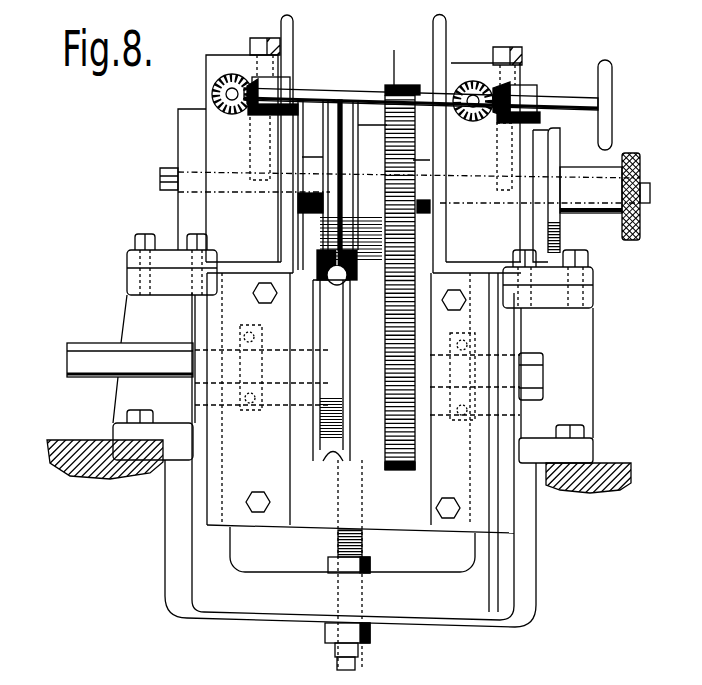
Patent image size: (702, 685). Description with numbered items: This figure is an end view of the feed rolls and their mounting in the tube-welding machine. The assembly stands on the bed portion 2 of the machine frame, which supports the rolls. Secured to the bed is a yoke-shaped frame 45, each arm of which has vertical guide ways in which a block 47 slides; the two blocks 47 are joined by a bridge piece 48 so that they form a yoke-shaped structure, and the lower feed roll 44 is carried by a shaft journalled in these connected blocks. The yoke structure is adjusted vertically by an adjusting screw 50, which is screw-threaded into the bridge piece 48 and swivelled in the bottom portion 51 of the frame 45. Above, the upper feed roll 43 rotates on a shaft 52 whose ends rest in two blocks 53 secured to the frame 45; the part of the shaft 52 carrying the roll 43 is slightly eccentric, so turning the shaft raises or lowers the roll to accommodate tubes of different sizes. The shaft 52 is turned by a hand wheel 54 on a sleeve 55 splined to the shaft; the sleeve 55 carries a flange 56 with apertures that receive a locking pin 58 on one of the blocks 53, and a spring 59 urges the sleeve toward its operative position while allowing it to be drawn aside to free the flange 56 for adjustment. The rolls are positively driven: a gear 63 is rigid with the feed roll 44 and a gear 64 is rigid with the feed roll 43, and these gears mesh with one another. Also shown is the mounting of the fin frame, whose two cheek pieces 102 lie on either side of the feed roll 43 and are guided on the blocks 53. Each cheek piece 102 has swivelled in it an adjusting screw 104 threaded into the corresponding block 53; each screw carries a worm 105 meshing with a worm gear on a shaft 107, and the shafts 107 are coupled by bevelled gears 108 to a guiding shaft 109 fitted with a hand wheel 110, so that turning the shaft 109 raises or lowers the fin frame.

The bed portion 2 is at (103, 472).
The upper feed roll 43 is at (372, 98).
The feed roll 44 is at (318, 440).
The yoke-shaped frame 45 is at (520, 324).
The block 47 is at (200, 498).
The bridge piece 48 is at (326, 522).
The adjusting screw 50 is at (362, 550).
The bottom portion 51 is at (308, 612).
The shaft 52 is at (236, 185).
The block 53 is at (180, 118).
The hand wheel 54 is at (638, 154).
The sleeve 55 is at (596, 225).
The flange 56 is at (559, 150).
The locking pin 58 is at (540, 137).
The spring 59 is at (604, 182).
The gear 63 is at (406, 475).
The gear 64 is at (401, 155).
The cheek piece 102 is at (290, 30).
The adjusting screw 104 is at (256, 38).
The worm 105 is at (286, 90).
The shaft 107 is at (212, 92).
The bevelled gears 108 is at (252, 76).
The guiding shaft 109 is at (322, 88).
The hand wheel 110 is at (613, 84).